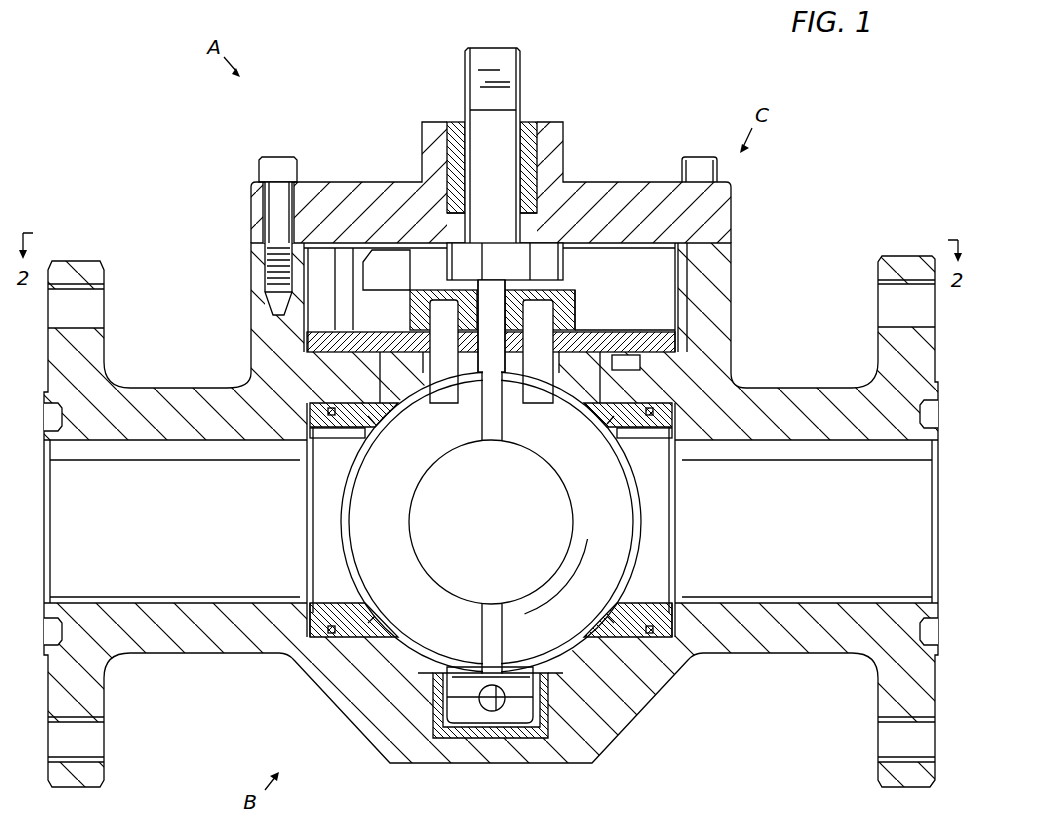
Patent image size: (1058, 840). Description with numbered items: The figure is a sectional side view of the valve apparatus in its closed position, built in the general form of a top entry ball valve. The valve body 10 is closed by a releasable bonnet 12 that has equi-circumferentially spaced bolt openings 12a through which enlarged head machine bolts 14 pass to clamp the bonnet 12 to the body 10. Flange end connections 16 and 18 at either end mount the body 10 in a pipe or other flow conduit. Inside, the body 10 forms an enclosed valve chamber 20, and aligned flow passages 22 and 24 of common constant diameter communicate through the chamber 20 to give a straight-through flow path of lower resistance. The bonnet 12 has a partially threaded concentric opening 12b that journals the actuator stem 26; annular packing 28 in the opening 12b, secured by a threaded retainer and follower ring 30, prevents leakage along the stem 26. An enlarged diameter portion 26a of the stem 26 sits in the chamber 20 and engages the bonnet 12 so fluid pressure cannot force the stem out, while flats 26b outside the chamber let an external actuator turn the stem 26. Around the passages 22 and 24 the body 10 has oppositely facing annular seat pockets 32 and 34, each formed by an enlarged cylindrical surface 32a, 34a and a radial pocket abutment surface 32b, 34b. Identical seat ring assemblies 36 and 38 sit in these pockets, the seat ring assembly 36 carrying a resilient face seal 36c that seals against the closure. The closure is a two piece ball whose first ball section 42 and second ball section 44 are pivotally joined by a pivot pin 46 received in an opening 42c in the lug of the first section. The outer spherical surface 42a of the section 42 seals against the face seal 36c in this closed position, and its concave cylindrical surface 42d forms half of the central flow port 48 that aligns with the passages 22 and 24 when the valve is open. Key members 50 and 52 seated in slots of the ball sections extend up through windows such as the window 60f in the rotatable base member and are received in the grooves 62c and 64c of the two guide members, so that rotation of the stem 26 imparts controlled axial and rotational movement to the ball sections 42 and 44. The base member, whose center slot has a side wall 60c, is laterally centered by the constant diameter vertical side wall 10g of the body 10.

The valve body 10 is at (829, 637).
The vertical side wall 10g is at (690, 283).
The bonnet 12 is at (607, 186).
The bolt openings 12a is at (266, 208).
The concentric opening 12b is at (448, 224).
The machine bolts 14 is at (694, 158).
The flange end connection 16 is at (87, 356).
The flange end connection 18 is at (882, 345).
The valve chamber 20 is at (700, 354).
The flow passage 22 is at (122, 539).
The flow passage 24 is at (802, 535).
The actuator means stem 26 is at (508, 128).
The enlarged diameter portion 26a is at (512, 256).
The flats 26b is at (496, 47).
The annular packing 28 is at (456, 152).
The retainer and follower ring 30 is at (455, 120).
The seat pocket 32 is at (374, 643).
The cylindrical surface 32a is at (352, 640).
The pocket abutment surface 32b is at (306, 627).
The seat pocket 34 is at (632, 636).
The cylindrical surface 34a is at (617, 638).
The pocket abutment surface 34b is at (668, 640).
The seat ring assembly 36 is at (318, 403).
The face seal 36c is at (336, 440).
The seat ring assembly 38 is at (665, 405).
The first ball section 42 is at (485, 556).
The outer spherical surface 42a is at (420, 650).
The opening 42c is at (488, 724).
The concave cylindrical surface 42d is at (410, 535).
The second ball section 44 is at (558, 640).
The pivot pin 46 is at (501, 708).
The central flow port 48 is at (482, 504).
The key member 50 is at (443, 384).
The key member 52 is at (645, 325).
The side wall 60c is at (302, 306).
The window 60f is at (597, 320).
The groove 62c is at (423, 340).
The groove 64c is at (576, 324).